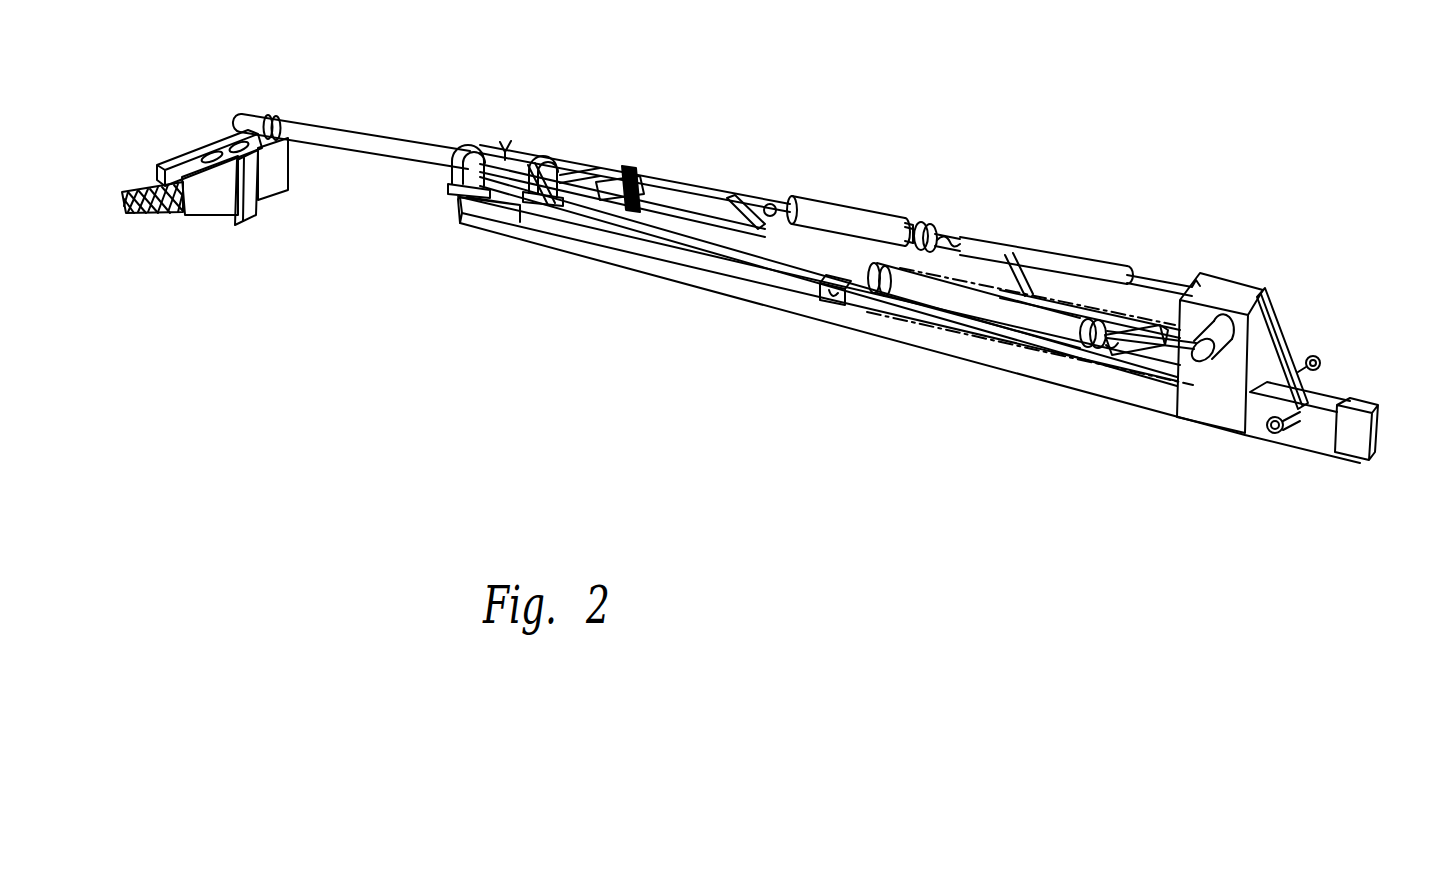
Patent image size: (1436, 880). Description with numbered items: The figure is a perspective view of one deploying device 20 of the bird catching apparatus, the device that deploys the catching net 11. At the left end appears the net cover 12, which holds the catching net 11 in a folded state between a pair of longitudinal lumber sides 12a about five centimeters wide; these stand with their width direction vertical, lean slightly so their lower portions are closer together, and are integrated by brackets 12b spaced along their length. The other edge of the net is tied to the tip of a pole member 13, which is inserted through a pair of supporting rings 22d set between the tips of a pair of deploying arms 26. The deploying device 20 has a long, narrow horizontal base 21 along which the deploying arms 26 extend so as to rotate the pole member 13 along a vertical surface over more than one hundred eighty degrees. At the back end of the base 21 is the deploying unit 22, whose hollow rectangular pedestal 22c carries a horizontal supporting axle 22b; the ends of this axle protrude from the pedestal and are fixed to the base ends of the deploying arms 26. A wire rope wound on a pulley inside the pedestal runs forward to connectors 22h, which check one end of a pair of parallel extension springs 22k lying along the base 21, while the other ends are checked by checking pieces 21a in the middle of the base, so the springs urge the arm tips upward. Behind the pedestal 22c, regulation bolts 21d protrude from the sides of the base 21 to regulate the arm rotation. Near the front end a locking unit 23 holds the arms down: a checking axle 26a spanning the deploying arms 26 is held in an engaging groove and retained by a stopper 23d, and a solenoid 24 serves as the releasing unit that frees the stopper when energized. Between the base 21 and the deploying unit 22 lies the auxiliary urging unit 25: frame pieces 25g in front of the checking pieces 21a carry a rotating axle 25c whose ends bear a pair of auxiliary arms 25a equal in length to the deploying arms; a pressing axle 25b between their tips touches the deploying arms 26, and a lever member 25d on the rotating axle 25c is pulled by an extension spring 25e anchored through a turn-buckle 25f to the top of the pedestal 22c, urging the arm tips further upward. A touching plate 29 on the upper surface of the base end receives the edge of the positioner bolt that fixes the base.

The catching net 11 is at (156, 256).
The net cover 12 is at (256, 229).
The longitudinal lumber sides 12a is at (282, 138).
The brackets 12b is at (239, 235).
The pole member 13 is at (351, 101).
The deploying device 20 is at (864, 65).
The base 21 is at (909, 330).
The checking pieces 21a is at (842, 346).
The regulation bolts 21d is at (1339, 412).
The deploying unit 22 is at (1132, 178).
The supporting axle 22b is at (1170, 415).
The pedestal 22c is at (1246, 314).
The supporting rings 22d is at (513, 121).
The connector 22h is at (1113, 408).
The extension springs 22k is at (1040, 329).
The locking unit 23 is at (645, 107).
The stopper 23d is at (598, 249).
The solenoid 24 is at (622, 156).
The auxiliary urging unit 25 is at (720, 291).
The auxiliary arms 25a is at (828, 288).
The pressing axle 25b is at (460, 258).
The rotating axle 25c is at (856, 182).
The lever member 25d is at (840, 132).
The extension spring 25e is at (955, 185).
The turn-buckle 25f is at (1046, 218).
The frame pieces 25g is at (766, 317).
The deploying arms 26 is at (843, 221).
The checking axle 26a is at (511, 253).
The touching plate 29 is at (1368, 398).